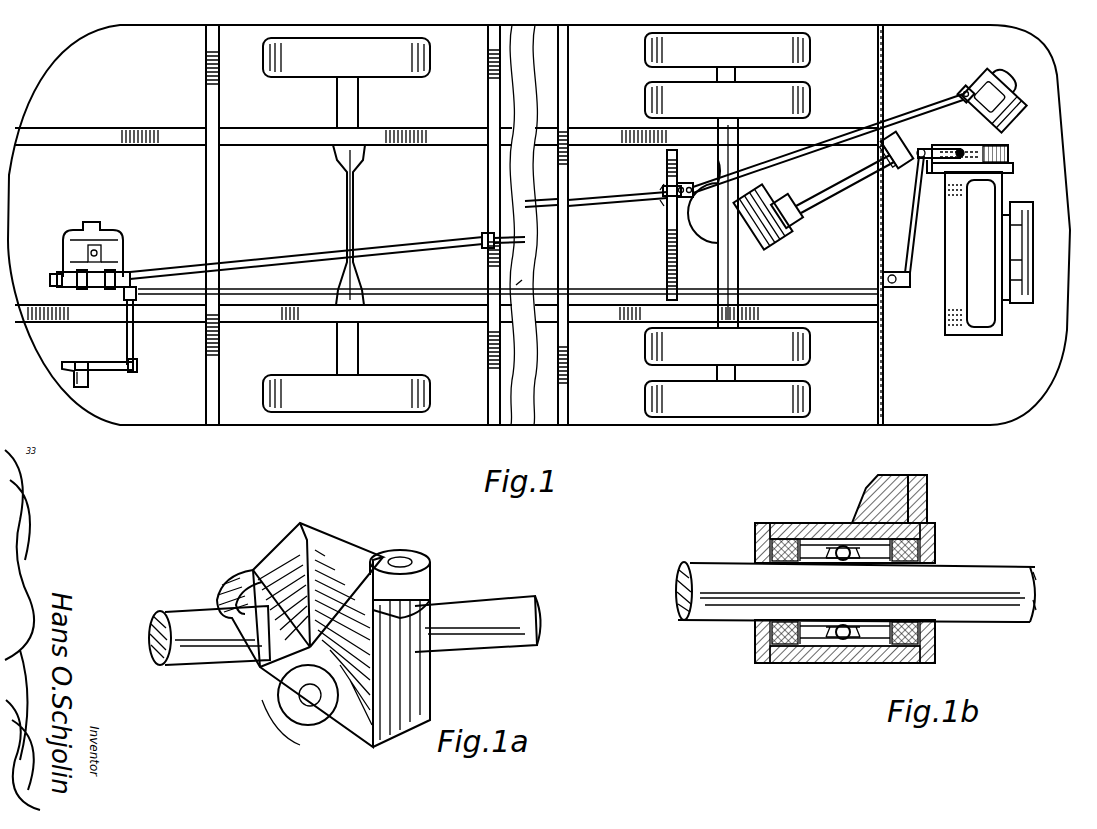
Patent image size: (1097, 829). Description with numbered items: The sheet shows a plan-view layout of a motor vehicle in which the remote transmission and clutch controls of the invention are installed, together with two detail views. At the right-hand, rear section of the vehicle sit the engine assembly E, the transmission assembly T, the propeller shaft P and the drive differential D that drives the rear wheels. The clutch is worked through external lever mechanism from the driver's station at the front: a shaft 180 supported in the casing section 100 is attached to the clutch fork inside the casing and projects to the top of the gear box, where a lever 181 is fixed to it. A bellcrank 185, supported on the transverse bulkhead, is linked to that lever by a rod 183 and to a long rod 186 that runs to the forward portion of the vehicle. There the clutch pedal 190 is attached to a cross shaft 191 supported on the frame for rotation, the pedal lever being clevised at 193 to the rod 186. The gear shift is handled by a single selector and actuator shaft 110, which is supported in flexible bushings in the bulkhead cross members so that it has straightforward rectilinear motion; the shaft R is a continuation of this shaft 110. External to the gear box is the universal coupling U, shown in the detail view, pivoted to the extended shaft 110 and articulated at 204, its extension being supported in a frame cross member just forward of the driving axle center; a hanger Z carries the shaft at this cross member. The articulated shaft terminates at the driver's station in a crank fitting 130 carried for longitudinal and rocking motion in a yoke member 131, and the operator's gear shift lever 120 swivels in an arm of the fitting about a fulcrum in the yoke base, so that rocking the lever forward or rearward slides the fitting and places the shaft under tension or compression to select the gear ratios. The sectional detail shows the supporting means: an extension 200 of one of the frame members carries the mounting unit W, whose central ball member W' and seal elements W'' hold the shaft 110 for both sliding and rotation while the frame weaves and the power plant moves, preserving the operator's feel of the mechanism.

In FIG. 1, the casing section 100 is at (1009, 153).
In FIG. 1, the shaft 110 is at (518, 239).
In FIG. 1A, the shaft 110 is at (185, 622).
In FIG. 1B, the shaft 110 is at (995, 575).
In FIG. 1, the gear shift lever 120 is at (99, 258).
In FIG. 1, the crank fitting 130 is at (124, 294).
In FIG. 1, the yoke member 131 is at (78, 241).
In FIG. 1, the shaft 180 is at (960, 152).
In FIG. 1, the lever 181 is at (937, 174).
In FIG. 1, the rod 183 is at (911, 243).
In FIG. 1, the bellcrank 185 is at (900, 288).
In FIG. 1, the long rod 186 is at (517, 285).
In FIG. 1, the clutch pedal 190 is at (76, 366).
In FIG. 1, the cross shaft 191 is at (134, 366).
In FIG. 1, the clevis 193 is at (132, 312).
In FIG. 1B, the frame member extension 200 is at (926, 506).
In FIG. 1, the articulation 204 is at (672, 205).
In FIG. 1A, the articulation 204 is at (240, 577).
In FIG. 1, the shaft R is at (430, 248).
In FIG. 1, the mounting unit W is at (649, 175).
In FIG. 1B, the mounting unit W is at (823, 584).
In FIG. 1B, the central ball member W' is at (837, 524).
In FIG. 1B, the seal elements W'' is at (910, 584).
In FIG. 1, the universal coupling U is at (689, 184).
In FIG. 1A, the universal coupling U is at (343, 536).
In FIG. 1, the hanger bar Z is at (670, 285).
In FIG. 1, the drive differential D is at (742, 283).
In FIG. 1, the propeller shaft P is at (818, 200).
In FIG. 1, the transmission assembly T is at (938, 103).
In FIG. 1, the engine assembly E is at (993, 318).